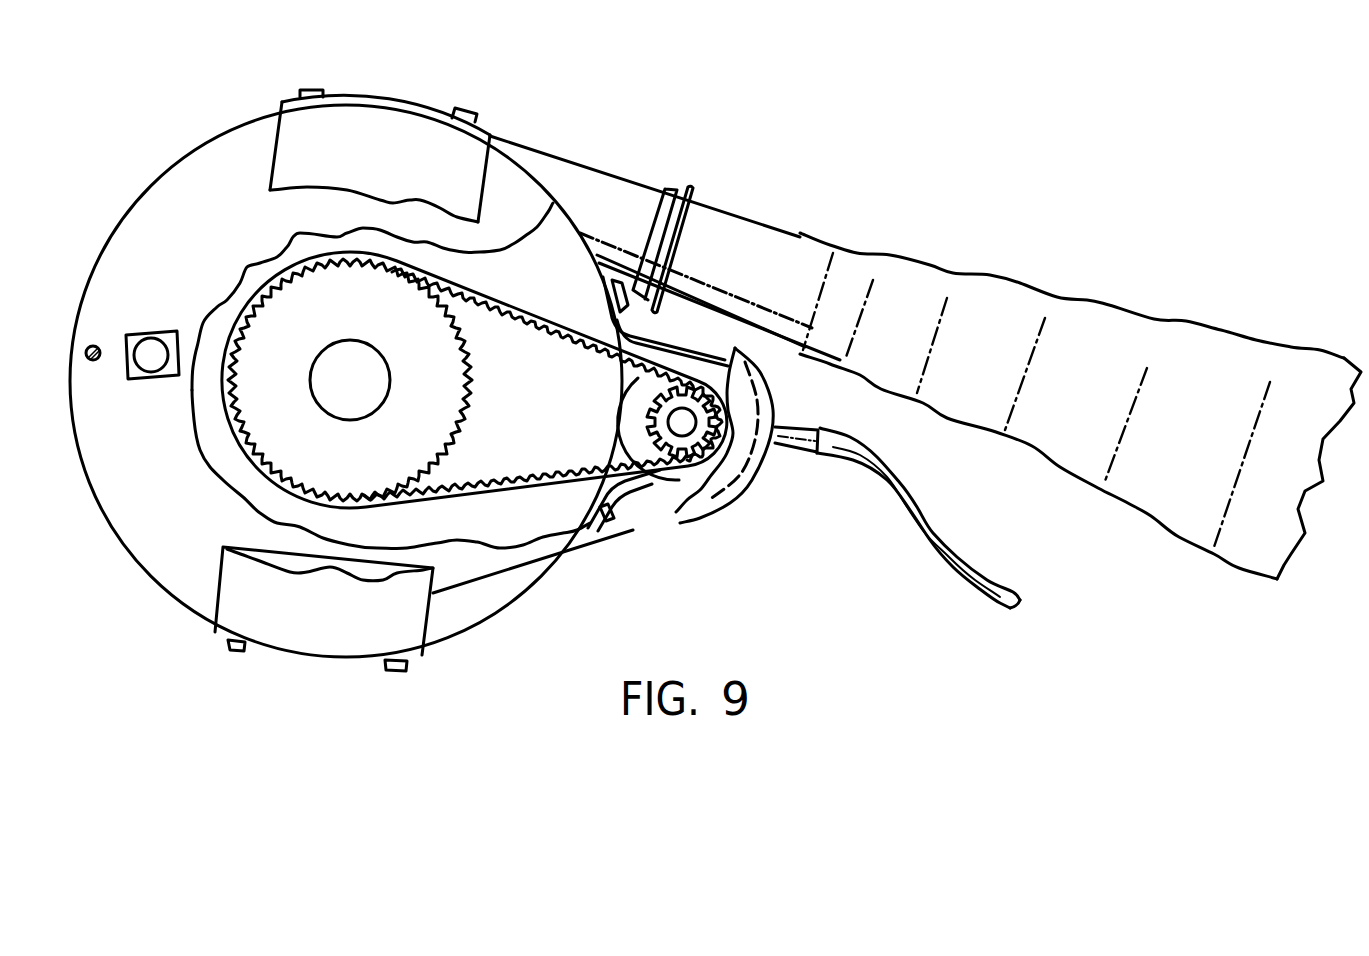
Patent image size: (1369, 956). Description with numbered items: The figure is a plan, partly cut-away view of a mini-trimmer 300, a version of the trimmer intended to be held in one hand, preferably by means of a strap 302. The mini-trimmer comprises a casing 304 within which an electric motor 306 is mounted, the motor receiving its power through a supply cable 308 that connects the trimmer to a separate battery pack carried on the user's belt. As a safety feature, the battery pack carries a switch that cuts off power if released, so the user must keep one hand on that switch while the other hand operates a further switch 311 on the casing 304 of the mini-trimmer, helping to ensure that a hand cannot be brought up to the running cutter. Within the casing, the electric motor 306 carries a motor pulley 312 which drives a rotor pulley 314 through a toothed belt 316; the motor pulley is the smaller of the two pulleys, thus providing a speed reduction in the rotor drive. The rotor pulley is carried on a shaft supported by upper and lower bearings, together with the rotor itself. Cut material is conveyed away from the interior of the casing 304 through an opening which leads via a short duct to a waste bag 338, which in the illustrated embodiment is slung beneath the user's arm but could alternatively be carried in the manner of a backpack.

The mini-trimmer 300 is at (791, 163).
The strap 302 is at (425, 97).
The casing 304 is at (147, 573).
The electric motor 306 is at (765, 478).
The supply cable 308 is at (937, 563).
The switch 311 is at (150, 338).
The motor pulley 312 is at (684, 440).
The rotor pulley 314 is at (350, 380).
The toothed belt 316 is at (533, 490).
The waste bag 338 is at (1210, 461).